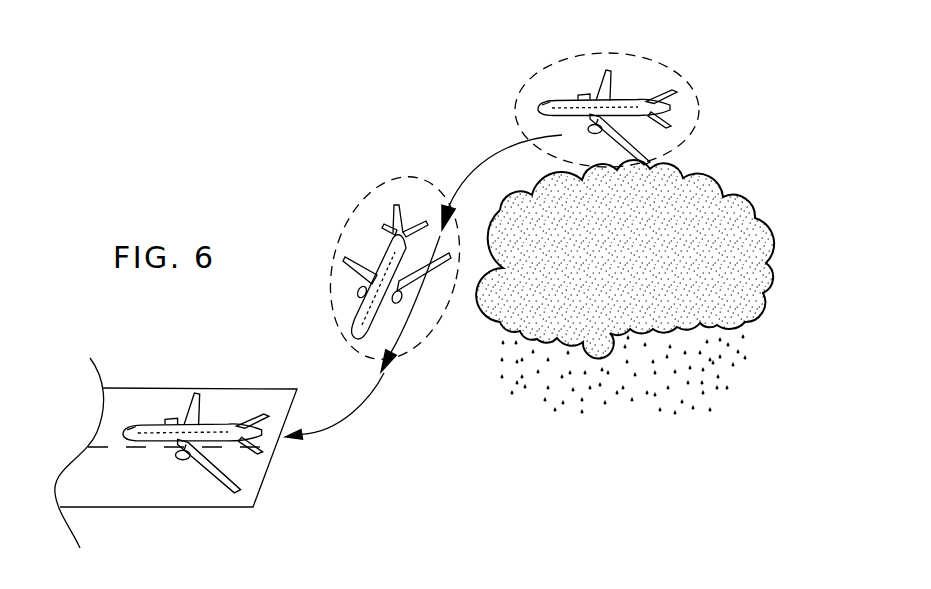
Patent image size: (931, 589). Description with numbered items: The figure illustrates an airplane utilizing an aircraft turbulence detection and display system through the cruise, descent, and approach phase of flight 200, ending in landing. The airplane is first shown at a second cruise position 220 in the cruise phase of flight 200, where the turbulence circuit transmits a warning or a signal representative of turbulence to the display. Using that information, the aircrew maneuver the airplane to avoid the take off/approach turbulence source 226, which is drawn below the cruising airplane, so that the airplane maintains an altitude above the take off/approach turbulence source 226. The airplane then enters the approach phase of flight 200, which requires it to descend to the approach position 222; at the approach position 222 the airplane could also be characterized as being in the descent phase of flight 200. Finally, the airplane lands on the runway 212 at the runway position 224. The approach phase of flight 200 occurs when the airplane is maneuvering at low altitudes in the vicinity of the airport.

The phase of flight 200 is at (698, 105).
The runway 212 is at (115, 397).
The second cruise position 220 is at (618, 98).
The approach position 222 is at (387, 252).
The runway position 224 is at (204, 427).
The take off/approach turbulence source 226 is at (733, 208).